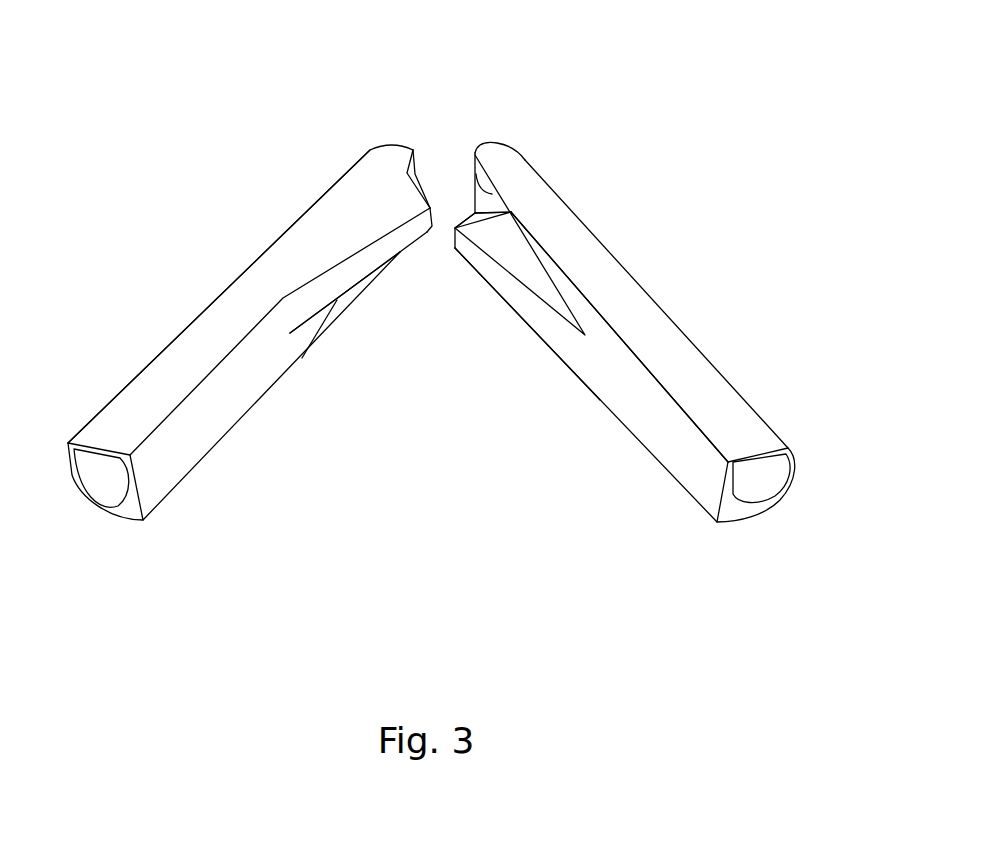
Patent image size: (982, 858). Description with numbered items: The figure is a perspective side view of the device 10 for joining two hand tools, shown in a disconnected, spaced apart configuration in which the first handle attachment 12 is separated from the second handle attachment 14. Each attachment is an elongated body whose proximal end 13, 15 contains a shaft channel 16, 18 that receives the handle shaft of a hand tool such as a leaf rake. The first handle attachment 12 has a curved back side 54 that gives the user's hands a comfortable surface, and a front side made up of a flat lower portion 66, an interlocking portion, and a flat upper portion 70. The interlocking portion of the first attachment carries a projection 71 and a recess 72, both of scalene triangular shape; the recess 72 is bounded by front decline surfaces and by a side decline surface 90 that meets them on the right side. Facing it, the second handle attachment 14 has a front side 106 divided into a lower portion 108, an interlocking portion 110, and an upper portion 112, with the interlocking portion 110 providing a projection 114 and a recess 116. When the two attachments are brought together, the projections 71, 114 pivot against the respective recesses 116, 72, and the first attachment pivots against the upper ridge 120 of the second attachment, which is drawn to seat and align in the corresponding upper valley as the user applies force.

The device 10 is at (429, 282).
The first handle attachment 12 is at (250, 326).
The proximal end 13 is at (132, 508).
The second handle attachment 14 is at (623, 325).
The proximal end 15 is at (731, 510).
The shaft channel 16 is at (107, 507).
The shaft channel 18 is at (757, 505).
The back side 54 is at (183, 323).
The lower portion 66 is at (222, 417).
The upper portion 70 is at (413, 172).
The projection 71 is at (411, 200).
The recess 72 is at (351, 320).
The side decline surface 90 is at (360, 289).
The front side 106 is at (532, 410).
The lower portion 108 is at (655, 415).
The interlocking portion 110 is at (497, 340).
The upper portion 112 is at (478, 178).
The projection 114 is at (480, 266).
The recess 116 is at (548, 272).
The upper ridge 120 is at (480, 192).